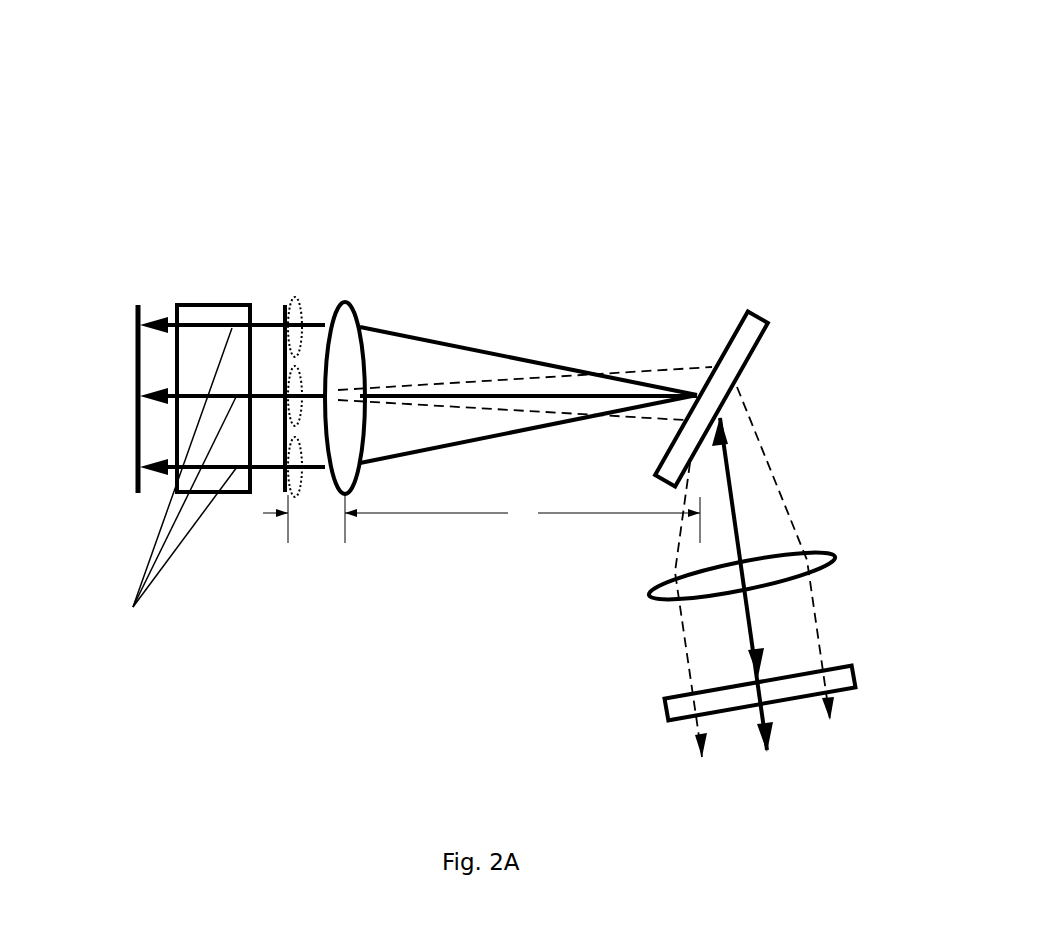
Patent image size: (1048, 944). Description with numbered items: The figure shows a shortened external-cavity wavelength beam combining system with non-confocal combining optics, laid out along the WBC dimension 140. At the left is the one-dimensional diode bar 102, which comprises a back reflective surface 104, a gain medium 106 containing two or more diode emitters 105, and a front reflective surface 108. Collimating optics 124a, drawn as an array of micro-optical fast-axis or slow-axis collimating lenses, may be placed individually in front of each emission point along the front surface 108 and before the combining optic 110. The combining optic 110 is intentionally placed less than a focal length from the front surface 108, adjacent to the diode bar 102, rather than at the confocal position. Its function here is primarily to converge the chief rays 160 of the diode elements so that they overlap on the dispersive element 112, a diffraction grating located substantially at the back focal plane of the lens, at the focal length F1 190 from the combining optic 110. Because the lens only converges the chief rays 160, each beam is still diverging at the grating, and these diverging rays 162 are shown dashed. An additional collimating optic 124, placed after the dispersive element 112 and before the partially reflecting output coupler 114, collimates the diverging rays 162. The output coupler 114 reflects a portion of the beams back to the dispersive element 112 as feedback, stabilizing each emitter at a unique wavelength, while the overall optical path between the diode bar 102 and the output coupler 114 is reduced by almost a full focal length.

The diode bar 102 is at (142, 158).
The back reflective surface 104 is at (137, 303).
The diode emitters 105 is at (167, 489).
The gain medium 106 is at (198, 302).
The front reflective surface 108 is at (285, 300).
The collimating optics 124a is at (305, 300).
The combining optic 110 is at (362, 313).
The dispersive element 112 is at (752, 308).
The partially reflecting output coupler 114 is at (868, 670).
The collimating optic 124 is at (850, 550).
The WBC dimension 140 is at (63, 395).
The chief rays 160 is at (633, 395).
The diverging rays 162 is at (770, 473).
The focal length F1 190 is at (502, 540).